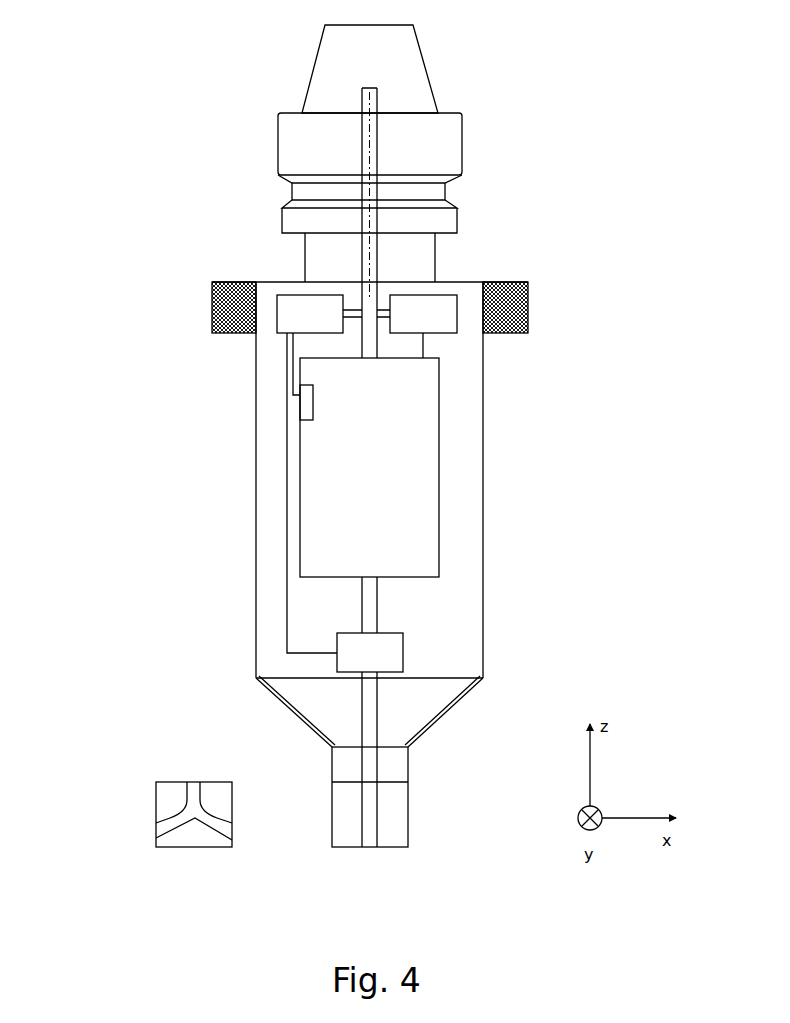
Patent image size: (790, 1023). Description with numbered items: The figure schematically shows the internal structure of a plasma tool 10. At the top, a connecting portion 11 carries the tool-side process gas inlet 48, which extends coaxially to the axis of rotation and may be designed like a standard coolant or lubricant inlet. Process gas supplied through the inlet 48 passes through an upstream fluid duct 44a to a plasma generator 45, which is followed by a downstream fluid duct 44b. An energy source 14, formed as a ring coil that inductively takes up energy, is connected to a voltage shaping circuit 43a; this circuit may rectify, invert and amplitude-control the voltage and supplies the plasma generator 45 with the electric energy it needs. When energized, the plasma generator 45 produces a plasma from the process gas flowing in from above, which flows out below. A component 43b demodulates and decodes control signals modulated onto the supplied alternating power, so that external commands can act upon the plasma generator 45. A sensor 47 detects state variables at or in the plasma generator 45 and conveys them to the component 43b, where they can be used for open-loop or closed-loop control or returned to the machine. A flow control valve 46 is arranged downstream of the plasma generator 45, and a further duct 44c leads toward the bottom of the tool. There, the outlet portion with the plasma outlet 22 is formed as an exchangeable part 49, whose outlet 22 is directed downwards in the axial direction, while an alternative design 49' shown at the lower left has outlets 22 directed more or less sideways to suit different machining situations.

The tool 10 is at (560, 177).
The connecting portion 11 is at (263, 25).
The energy source 14 is at (212, 300).
The plasma outlet 22 is at (370, 848).
The voltage shaping circuit 43a is at (437, 307).
The component for receiving control signals 43b is at (303, 307).
The upstream fluid duct 44a is at (372, 342).
The downstream fluid duct 44b is at (372, 616).
The lower shaft section 44c is at (368, 707).
The plasma generator 45 is at (422, 437).
The flow control valve 46 is at (393, 652).
The sensor 47 is at (305, 408).
The process gas inlet 48 is at (370, 98).
The exchangeable part 49 is at (401, 797).
The alternative outlet design 49' is at (157, 814).